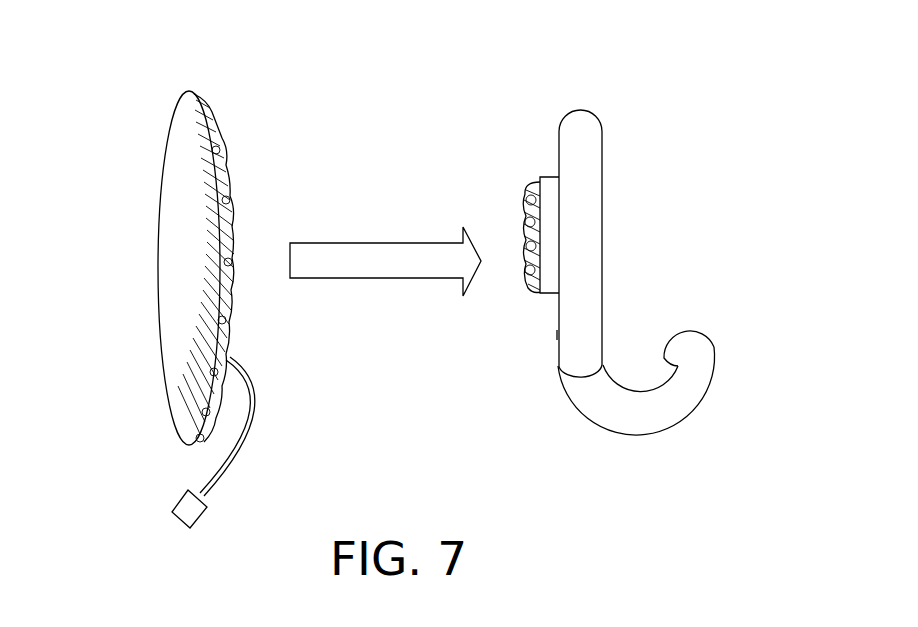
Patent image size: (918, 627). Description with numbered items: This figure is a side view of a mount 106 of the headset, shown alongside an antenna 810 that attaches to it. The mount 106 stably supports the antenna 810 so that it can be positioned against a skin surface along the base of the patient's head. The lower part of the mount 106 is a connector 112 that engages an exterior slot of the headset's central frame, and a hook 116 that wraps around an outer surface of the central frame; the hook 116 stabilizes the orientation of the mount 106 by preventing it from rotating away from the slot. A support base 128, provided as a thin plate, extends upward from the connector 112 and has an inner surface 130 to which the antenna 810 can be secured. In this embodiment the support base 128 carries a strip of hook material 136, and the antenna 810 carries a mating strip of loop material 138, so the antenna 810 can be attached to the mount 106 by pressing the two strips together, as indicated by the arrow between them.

The antenna 810 is at (142, 180).
The strip of loop material 138 is at (273, 220).
The strip of hook material 136 is at (500, 173).
The mount 106 is at (633, 172).
The support base 128 is at (605, 293).
The inner surface 130 is at (557, 335).
The connector 112 is at (595, 412).
The hook 116 is at (720, 367).